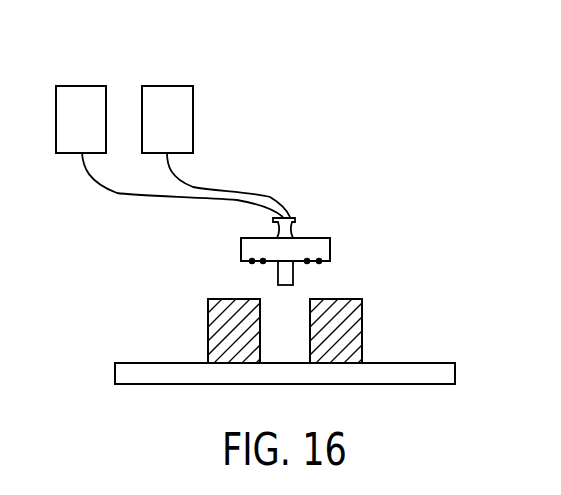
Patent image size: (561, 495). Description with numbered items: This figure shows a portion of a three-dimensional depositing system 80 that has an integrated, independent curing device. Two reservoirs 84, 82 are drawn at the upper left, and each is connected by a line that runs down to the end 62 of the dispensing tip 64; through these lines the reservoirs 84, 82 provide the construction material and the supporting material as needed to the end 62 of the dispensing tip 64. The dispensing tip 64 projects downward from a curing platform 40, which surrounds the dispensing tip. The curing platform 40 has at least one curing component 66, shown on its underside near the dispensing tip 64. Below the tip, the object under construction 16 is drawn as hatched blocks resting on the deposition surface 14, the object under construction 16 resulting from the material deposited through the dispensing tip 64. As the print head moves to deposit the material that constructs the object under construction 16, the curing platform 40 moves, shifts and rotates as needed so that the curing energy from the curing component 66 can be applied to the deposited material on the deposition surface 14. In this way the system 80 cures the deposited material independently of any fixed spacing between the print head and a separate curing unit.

The deposition surface 14 is at (455, 363).
The object under construction 16 is at (362, 299).
The curing platform 40 is at (331, 243).
The end of the dispensing tip 62 is at (296, 226).
The dispensing tip 64 is at (284, 292).
The curing component 66 is at (241, 265).
The 3D depositing system 80 is at (440, 158).
The reservoir 82 is at (190, 85).
The reservoir 84 is at (102, 85).